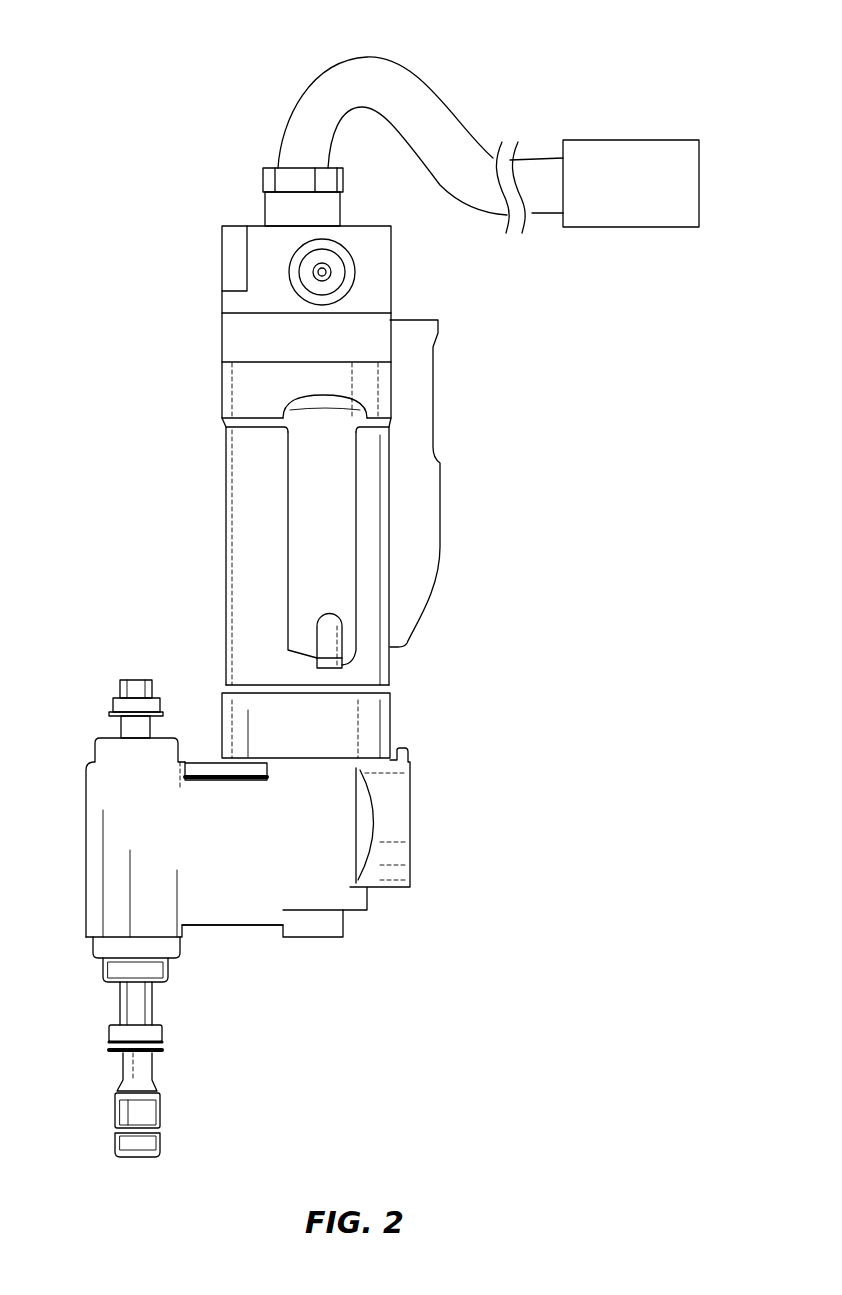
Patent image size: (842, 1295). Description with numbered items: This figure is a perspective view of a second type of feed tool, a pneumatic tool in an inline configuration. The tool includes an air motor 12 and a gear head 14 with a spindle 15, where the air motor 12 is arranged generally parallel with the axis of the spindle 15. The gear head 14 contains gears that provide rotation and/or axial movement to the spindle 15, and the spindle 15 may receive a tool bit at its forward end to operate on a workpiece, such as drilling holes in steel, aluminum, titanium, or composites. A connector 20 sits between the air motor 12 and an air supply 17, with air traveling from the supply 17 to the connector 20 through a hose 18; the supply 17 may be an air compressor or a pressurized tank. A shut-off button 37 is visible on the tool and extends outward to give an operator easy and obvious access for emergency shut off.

The air motor 12 is at (253, 453).
The gear head 14 is at (255, 930).
The spindle 15 is at (137, 687).
The air supply 17 is at (660, 150).
The hose 18 is at (305, 122).
The connector 20 is at (237, 260).
The shut-off button 37 is at (342, 267).